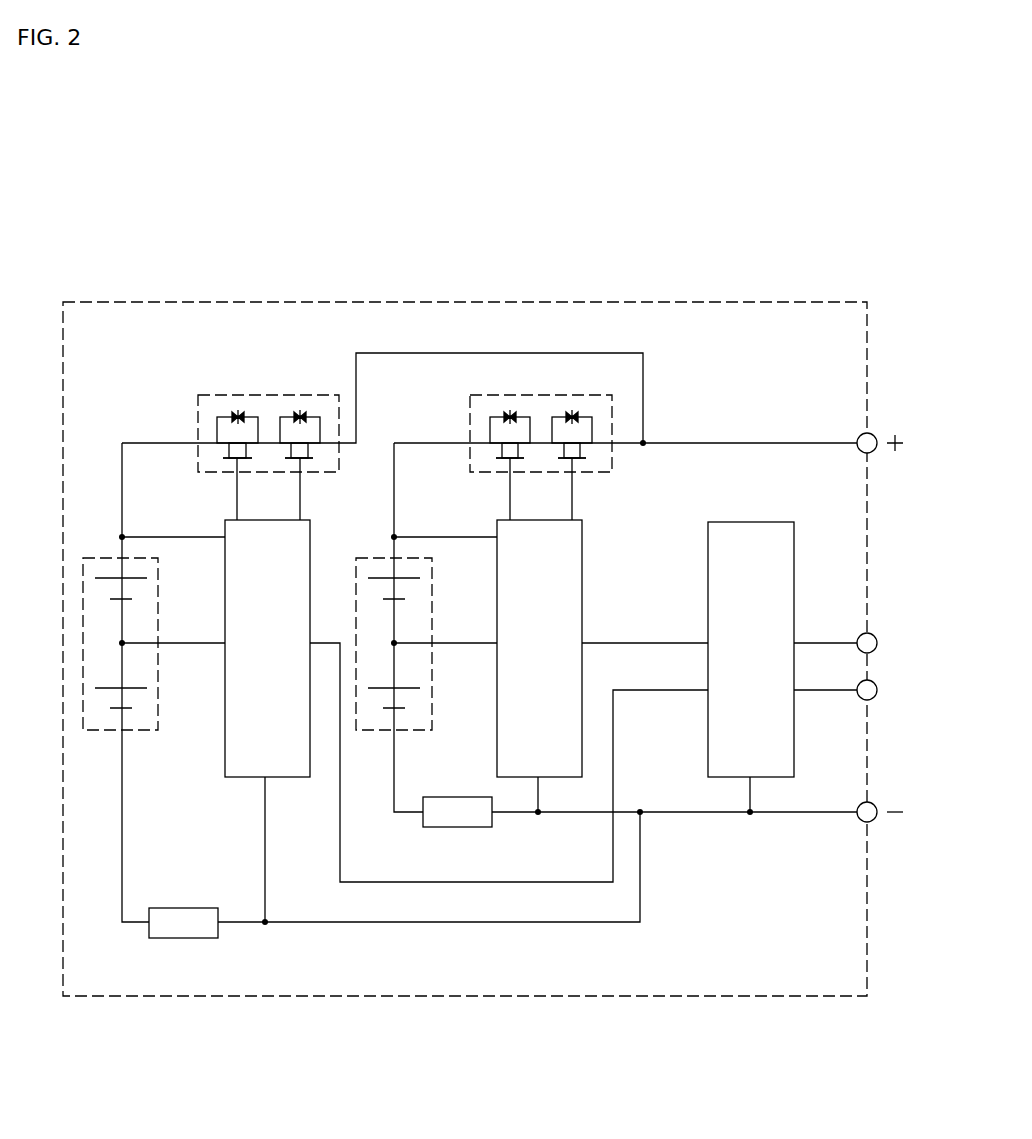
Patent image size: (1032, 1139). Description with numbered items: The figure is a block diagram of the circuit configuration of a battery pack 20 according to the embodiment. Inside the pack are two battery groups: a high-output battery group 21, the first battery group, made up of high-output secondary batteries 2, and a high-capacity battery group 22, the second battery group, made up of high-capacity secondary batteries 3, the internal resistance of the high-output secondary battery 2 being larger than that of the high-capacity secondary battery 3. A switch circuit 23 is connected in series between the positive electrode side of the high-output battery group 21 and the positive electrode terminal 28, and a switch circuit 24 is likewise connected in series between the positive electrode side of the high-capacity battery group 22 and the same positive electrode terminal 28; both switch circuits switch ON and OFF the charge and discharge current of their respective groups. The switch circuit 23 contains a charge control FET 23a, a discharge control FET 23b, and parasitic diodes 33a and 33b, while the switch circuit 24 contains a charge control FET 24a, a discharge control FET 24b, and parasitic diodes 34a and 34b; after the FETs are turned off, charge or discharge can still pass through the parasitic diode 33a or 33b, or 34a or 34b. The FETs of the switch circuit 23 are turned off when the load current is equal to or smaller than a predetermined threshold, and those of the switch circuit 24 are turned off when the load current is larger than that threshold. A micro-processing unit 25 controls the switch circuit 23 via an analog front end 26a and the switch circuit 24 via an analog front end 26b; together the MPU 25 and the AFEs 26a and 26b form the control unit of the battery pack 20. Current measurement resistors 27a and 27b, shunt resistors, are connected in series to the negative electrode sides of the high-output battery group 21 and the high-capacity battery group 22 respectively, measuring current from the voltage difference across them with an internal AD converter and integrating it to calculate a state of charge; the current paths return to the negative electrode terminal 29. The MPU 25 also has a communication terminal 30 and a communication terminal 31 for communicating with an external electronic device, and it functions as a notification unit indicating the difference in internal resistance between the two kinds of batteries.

The battery pack 20 is at (122, 302).
The high-output secondary battery 2 is at (408, 576).
The high-capacity secondary battery 3 is at (137, 576).
The high-output battery group 21 is at (377, 733).
The high-capacity battery group 22 is at (104, 733).
The switch circuit 23 is at (545, 395).
The charge control FET 23a is at (500, 460).
The discharge control FET 23b is at (584, 460).
The switch circuit 24 is at (272, 395).
The charge control FET 24a is at (228, 460).
The discharge control FET 24b is at (310, 460).
The micro-processing unit 25 is at (752, 522).
The analog front end 26a is at (559, 777).
The analog front end 26b is at (291, 777).
The current measurement resistor 27a is at (458, 827).
The current measurement resistor 27b is at (183, 938).
The positive electrode terminal 28 is at (874, 435).
The negative electrode terminal 29 is at (874, 803).
The communication terminal 30 is at (878, 645).
The communication terminal 31 is at (878, 692).
The parasitic diode 33a is at (510, 410).
The parasitic diode 33b is at (574, 410).
The parasitic diode 34a is at (240, 410).
The parasitic diode 34b is at (302, 410).